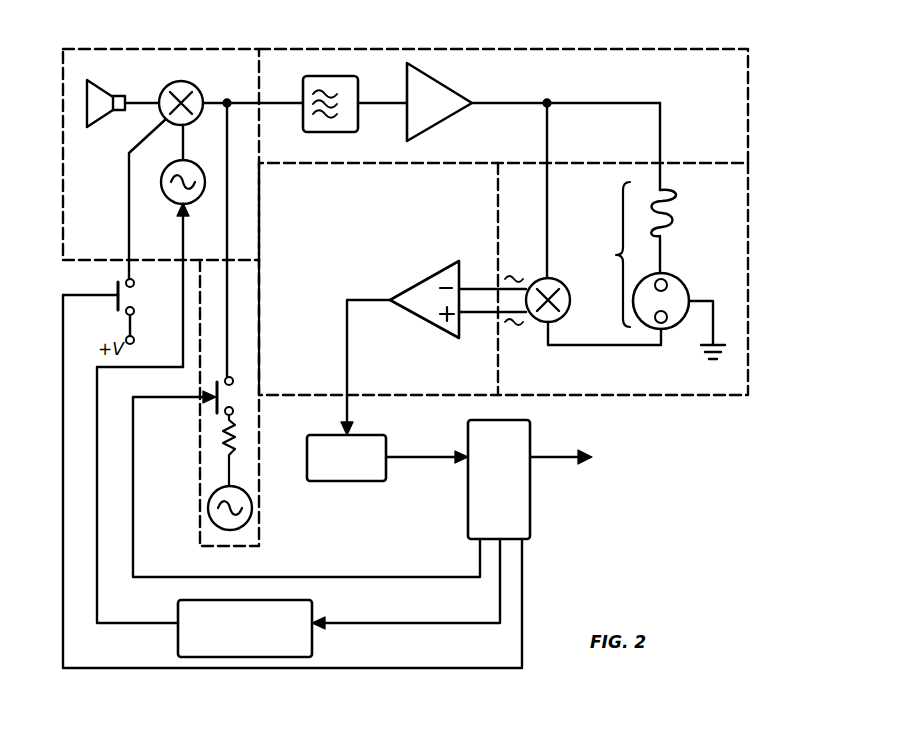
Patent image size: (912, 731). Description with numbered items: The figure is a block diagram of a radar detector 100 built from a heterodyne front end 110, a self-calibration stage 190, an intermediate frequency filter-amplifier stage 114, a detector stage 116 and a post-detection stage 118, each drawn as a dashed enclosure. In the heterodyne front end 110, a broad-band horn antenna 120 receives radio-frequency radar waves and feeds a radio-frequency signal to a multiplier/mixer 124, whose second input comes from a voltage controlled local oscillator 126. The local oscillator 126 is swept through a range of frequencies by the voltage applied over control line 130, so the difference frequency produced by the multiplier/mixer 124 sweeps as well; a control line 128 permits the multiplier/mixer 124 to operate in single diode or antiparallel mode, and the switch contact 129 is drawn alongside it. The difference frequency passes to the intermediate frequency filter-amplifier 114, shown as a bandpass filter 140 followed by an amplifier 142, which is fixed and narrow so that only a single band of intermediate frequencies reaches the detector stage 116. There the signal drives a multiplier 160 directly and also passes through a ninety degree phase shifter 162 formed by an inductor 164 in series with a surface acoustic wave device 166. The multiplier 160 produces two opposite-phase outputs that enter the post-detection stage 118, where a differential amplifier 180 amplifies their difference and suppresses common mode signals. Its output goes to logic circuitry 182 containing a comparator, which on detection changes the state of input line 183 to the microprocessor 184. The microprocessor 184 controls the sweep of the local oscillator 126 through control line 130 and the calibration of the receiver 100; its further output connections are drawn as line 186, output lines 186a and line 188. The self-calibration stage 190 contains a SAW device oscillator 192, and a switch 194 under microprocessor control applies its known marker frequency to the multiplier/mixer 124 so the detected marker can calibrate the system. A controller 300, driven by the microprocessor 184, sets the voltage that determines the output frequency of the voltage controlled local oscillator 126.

The radar detector 100 is at (770, 62).
The heterodyne front end 110 is at (190, 49).
The intermediate frequency filter-amplifier stage 114 is at (612, 49).
The detector stage 116 is at (748, 393).
The post-detection stage 118 is at (396, 395).
The broad-band horn antenna 120 is at (110, 88).
The multiplier/mixer 124 is at (197, 86).
The voltage controlled local oscillator 126 is at (165, 195).
The control line 128 is at (135, 340).
The switch contact 129 is at (135, 292).
The control line 130 is at (155, 367).
The bandpass filter 140 is at (345, 76).
The amplifier 142 is at (448, 88).
The multiplier 160 is at (541, 323).
The 90 degree phase shifter 162 is at (604, 254).
The inductor 164 is at (676, 222).
The surface acoustic wave (SAW) device 166 is at (680, 280).
The differential amplifier 180 is at (420, 312).
The logic circuitry 182 is at (355, 481).
The input line 183 is at (405, 457).
The microprocessor 184 is at (530, 515).
The output line to controller 186 is at (385, 623).
The output lines 186a-186d 186a is at (565, 457).
The control line 188 is at (385, 577).
The self-calibration stage 190 is at (252, 521).
The SAW device oscillator 192 is at (208, 508).
The switch 194 is at (212, 424).
The controller 300 is at (178, 606).